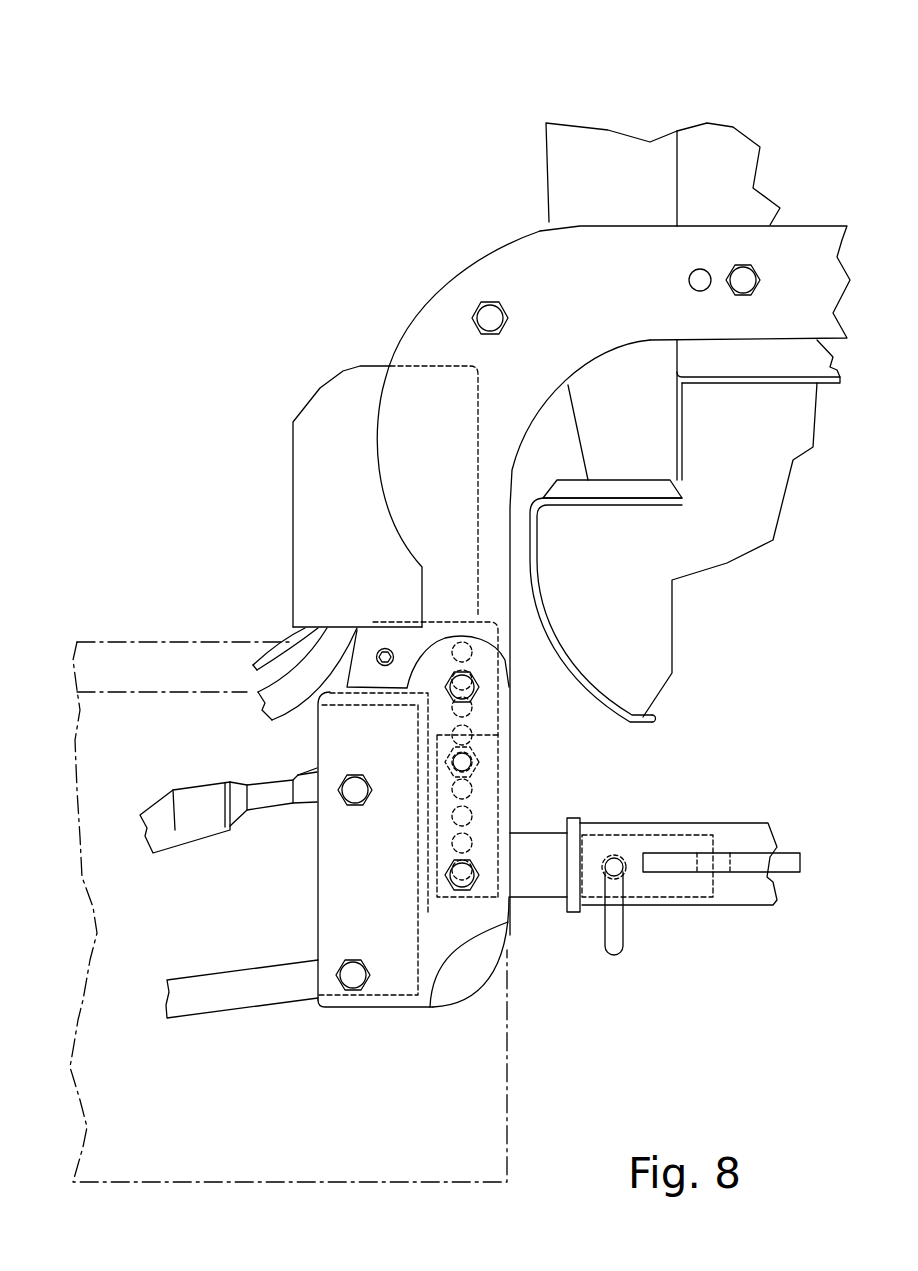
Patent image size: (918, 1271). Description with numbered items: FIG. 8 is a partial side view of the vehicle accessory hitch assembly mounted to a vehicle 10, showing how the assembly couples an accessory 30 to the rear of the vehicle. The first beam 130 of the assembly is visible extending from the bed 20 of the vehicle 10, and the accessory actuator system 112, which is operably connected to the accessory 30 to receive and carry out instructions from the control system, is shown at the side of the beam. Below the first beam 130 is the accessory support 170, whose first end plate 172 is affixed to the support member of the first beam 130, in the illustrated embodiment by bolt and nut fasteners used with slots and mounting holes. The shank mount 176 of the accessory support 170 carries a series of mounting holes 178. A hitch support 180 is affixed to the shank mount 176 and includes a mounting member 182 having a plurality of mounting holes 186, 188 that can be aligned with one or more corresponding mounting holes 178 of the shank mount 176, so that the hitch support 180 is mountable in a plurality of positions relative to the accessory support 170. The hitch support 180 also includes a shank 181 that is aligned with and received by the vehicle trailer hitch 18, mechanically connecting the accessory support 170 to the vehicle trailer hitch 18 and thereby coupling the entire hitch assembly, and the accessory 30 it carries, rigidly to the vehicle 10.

The vehicle 10 is at (621, 127).
The first beam 130 is at (440, 312).
The bed 20 is at (763, 377).
The accessory actuator system 112 is at (322, 390).
The accessory 30 is at (195, 632).
The accessory support 170 is at (520, 795).
The first end plate 172 is at (487, 923).
The shank mount 176 is at (487, 717).
The mounting holes 178 is at (472, 763).
The mounting holes 186 is at (470, 752).
The mounting member 182 is at (487, 814).
The mounting holes 188 is at (475, 860).
The hitch support 180 is at (540, 898).
The shank 181 is at (648, 888).
The vehicle trailer hitch 18 is at (750, 905).